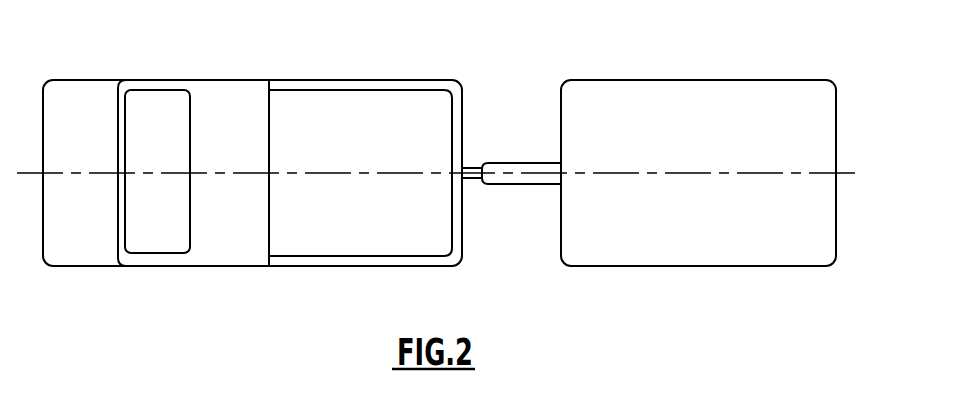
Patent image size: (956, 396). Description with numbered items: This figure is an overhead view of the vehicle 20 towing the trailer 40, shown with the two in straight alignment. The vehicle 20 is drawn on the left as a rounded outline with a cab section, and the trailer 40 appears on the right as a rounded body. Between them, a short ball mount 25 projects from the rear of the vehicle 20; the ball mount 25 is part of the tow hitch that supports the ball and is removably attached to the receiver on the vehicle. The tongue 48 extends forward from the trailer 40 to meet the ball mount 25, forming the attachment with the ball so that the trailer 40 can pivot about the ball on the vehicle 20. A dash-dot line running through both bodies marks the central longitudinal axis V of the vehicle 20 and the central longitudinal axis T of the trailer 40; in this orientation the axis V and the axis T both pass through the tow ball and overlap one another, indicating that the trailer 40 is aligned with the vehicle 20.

The vehicle 20 is at (157, 38).
The central longitudinal axis of the vehicle V is at (252, 175).
The ball mount 25 is at (473, 168).
The tongue 48 is at (520, 185).
The trailer 40 is at (786, 38).
The central longitudinal axis of the trailer T is at (765, 175).